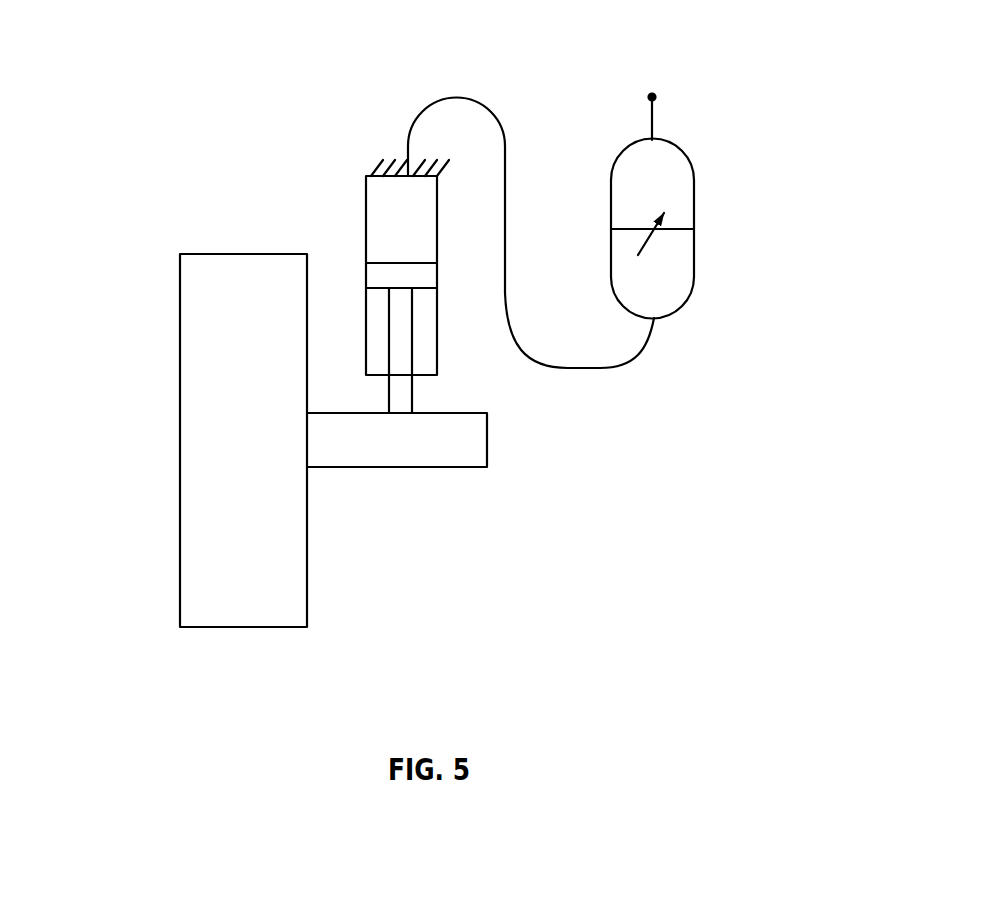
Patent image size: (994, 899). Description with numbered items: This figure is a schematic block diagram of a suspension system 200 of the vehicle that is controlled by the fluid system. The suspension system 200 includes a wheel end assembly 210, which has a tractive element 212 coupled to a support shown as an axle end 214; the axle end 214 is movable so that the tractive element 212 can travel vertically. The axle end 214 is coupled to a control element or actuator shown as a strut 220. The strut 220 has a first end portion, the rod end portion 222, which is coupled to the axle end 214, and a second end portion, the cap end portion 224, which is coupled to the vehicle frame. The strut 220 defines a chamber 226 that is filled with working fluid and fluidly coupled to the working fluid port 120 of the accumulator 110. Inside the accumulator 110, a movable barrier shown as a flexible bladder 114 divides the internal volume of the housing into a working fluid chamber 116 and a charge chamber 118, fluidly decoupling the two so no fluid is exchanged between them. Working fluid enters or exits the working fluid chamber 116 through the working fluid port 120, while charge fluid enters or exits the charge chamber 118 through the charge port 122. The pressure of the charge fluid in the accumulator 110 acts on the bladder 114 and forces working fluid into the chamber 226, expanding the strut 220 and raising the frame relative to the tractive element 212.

The suspension system 200 is at (207, 60).
The wheel end assembly 210 is at (127, 323).
The tractive element 212 is at (192, 443).
The axle end 214 is at (385, 468).
The strut 220 is at (325, 182).
The rod end portion 222 is at (413, 404).
The cap end portion 224 is at (379, 166).
The chamber 226 is at (381, 193).
The accumulator 110 is at (780, 148).
The bladder 114 is at (677, 229).
The working fluid chamber 116 is at (668, 282).
The charge chamber 118 is at (658, 172).
The working fluid port 120 is at (655, 320).
The charge port 122 is at (655, 97).